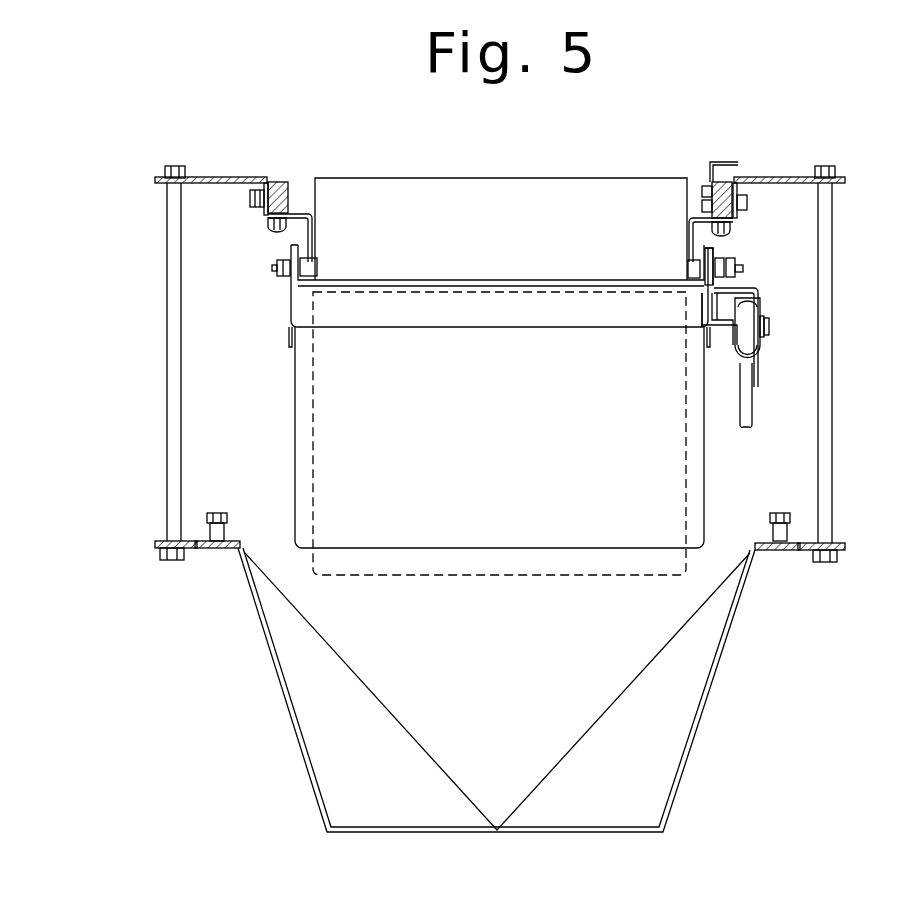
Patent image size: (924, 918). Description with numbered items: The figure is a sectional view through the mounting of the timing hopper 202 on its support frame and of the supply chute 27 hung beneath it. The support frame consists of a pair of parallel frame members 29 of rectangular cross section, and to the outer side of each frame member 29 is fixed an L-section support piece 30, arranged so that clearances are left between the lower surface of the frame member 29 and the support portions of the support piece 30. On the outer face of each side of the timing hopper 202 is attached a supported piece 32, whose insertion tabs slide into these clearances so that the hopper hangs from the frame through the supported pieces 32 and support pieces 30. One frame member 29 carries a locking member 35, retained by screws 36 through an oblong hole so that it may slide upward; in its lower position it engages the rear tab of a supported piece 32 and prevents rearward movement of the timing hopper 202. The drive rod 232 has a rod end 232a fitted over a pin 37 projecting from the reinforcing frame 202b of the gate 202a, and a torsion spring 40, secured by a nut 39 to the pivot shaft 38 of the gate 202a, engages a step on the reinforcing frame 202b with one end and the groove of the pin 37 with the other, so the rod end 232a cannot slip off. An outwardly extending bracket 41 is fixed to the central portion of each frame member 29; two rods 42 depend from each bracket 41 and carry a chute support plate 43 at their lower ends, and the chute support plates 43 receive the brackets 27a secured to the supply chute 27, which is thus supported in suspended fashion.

The supply chute 27 is at (718, 663).
The bracket 27a is at (241, 546).
The frame member 29 is at (278, 181).
The support piece 30 is at (262, 225).
The supported piece 32 is at (312, 222).
The locking member 35 is at (725, 161).
The screw 36 is at (703, 206).
The pin 37 is at (769, 328).
The pivot shaft 38 is at (744, 270).
The nut 39 is at (725, 258).
The torsion spring 40 is at (760, 290).
The bracket 41 is at (222, 177).
The rod 42 is at (167, 330).
The chute support plate 43 is at (190, 549).
The timing hopper 202 is at (565, 195).
The gate 202a is at (295, 430).
The reinforcing frame 202b is at (723, 302).
The drive rod 232 is at (753, 405).
The rod end 232a is at (732, 330).